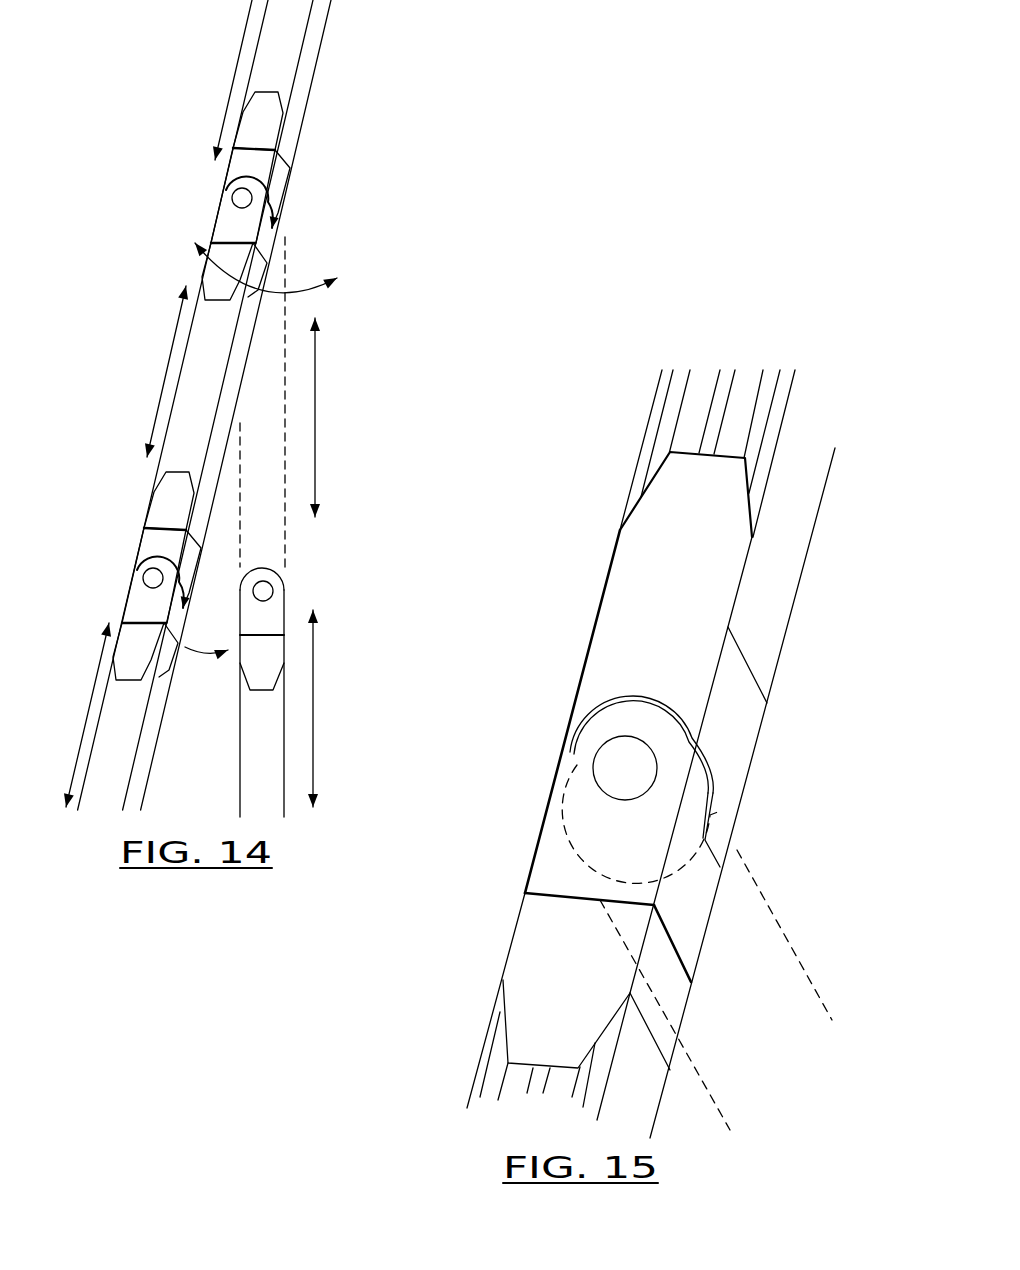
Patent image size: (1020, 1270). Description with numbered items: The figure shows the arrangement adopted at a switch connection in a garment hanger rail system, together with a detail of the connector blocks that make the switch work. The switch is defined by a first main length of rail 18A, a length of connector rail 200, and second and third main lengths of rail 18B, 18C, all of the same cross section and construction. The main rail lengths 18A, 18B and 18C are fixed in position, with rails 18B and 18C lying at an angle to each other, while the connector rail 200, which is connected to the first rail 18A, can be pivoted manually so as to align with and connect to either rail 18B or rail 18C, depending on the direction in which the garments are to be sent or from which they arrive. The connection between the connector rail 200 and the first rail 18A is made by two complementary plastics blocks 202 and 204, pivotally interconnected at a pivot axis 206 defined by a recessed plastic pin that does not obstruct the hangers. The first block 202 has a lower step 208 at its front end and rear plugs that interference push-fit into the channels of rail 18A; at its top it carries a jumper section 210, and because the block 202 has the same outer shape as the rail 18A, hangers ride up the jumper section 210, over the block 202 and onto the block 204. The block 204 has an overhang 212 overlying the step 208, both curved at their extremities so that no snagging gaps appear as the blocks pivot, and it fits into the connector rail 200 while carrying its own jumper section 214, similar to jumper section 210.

In FIG. 14, the first main length of rail 18A is at (317, 67).
In FIG. 15, the first main length of rail 18A is at (775, 583).
In FIG. 14, the second main length of rail 18B is at (110, 727).
In FIG. 14, the third main length of rail 18C is at (272, 735).
In FIG. 14, the connector rail 200 is at (192, 346).
In FIG. 15, the connector rail 200 is at (637, 1093).
In FIG. 15, the first block 202 is at (732, 717).
In FIG. 15, the second block 204 is at (552, 872).
In FIG. 15, the pivot axis 206 is at (567, 757).
In FIG. 15, the lower step 208 is at (722, 840).
In FIG. 15, the jumper section 210 is at (705, 595).
In FIG. 15, the overhang 212 is at (612, 762).
In FIG. 15, the jumper section 214 is at (560, 948).